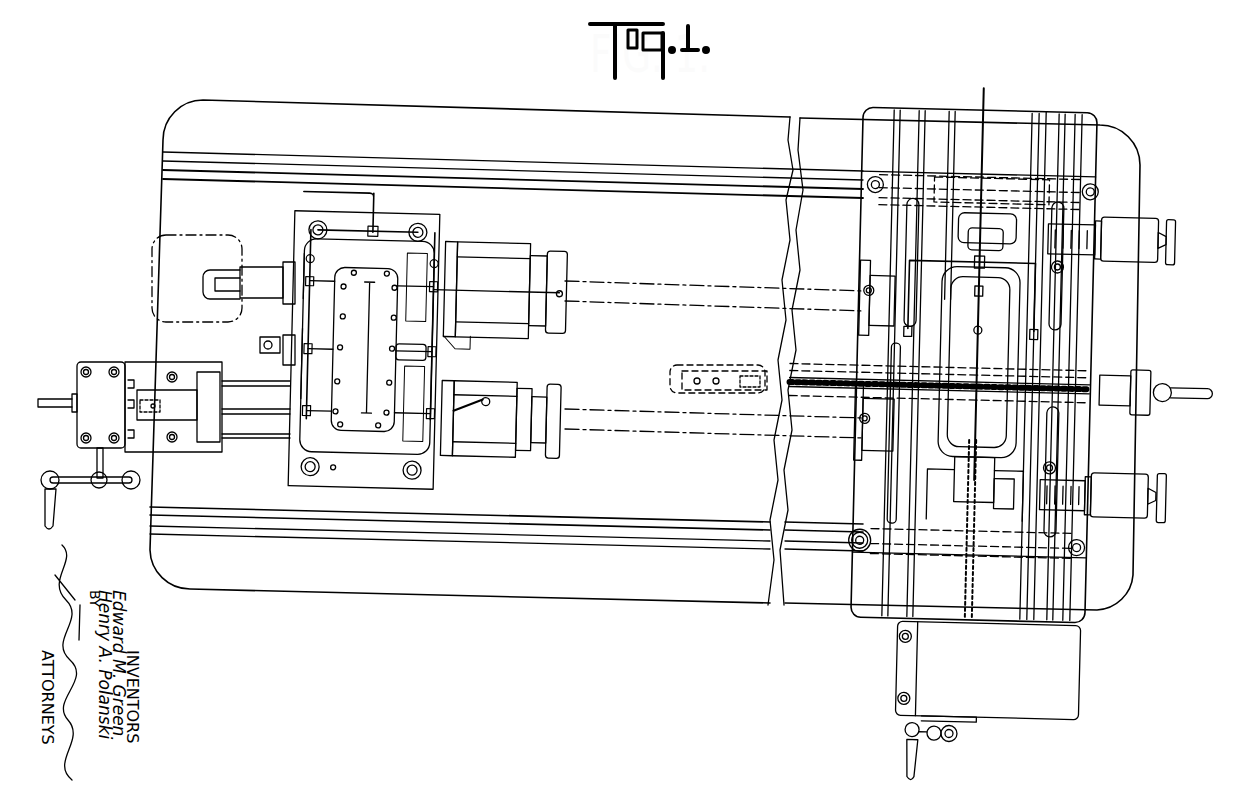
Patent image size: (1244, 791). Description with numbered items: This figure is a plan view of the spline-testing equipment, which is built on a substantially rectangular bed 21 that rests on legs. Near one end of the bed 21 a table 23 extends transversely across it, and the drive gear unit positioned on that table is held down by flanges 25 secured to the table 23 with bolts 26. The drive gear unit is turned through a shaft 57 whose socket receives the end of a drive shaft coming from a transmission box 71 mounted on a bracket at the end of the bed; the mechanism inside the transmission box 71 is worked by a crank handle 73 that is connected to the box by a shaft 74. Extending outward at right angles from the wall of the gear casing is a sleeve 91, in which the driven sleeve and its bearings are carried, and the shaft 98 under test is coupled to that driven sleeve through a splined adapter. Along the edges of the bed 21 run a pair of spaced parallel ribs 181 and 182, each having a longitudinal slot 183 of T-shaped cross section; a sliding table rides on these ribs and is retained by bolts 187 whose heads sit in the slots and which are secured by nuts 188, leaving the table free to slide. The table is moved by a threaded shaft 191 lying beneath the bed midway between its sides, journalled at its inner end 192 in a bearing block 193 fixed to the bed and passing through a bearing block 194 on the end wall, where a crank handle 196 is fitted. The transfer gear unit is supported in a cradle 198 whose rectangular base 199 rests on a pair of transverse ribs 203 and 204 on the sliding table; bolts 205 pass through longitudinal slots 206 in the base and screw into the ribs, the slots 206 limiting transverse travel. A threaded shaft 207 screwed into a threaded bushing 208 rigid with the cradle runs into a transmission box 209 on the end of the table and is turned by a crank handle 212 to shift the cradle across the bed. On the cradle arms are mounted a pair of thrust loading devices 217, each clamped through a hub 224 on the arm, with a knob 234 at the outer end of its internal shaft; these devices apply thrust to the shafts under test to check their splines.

The bed 21 is at (404, 600).
The table 23 is at (291, 466).
The flanges 25 is at (379, 470).
The bolts 26 is at (422, 471).
The shaft 57 is at (165, 392).
The transmission box 71 is at (101, 362).
The crank handle 73 is at (82, 488).
The shaft 74 is at (95, 452).
The sleeve 91 is at (487, 443).
The shaft under test 98 is at (660, 436).
The rib 181 is at (668, 548).
The rib 182 is at (704, 166).
The longitudinal slot 183 is at (661, 184).
The bolts 187 is at (1095, 180).
The nuts 188 is at (858, 535).
The shaft 191 is at (816, 374).
The inner end 192 is at (768, 372).
The bearing block 193 is at (706, 365).
The bearing block 194 is at (1147, 368).
The crank handle 196 is at (1184, 383).
The cradle 198 is at (915, 490).
The base 199 is at (956, 510).
The rib 203 is at (885, 600).
The rib 204 is at (1062, 612).
The bolts 205 is at (1062, 268).
The longitudinal slots 206 is at (1062, 312).
The threaded shaft 207 is at (978, 600).
The threaded bushing 208 is at (856, 446).
The transmission box 209 is at (1028, 703).
The crank handle 212 is at (905, 761).
The thrust loading devices 217 is at (1138, 232).
The hub 224 is at (1012, 505).
The knob 234 is at (1173, 237).